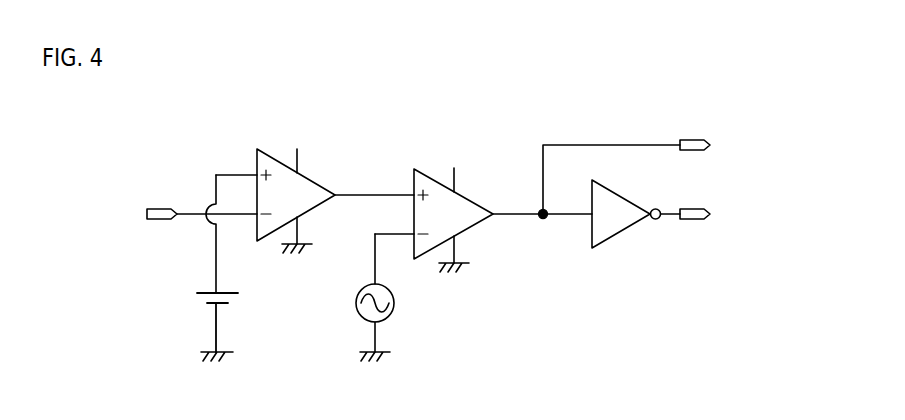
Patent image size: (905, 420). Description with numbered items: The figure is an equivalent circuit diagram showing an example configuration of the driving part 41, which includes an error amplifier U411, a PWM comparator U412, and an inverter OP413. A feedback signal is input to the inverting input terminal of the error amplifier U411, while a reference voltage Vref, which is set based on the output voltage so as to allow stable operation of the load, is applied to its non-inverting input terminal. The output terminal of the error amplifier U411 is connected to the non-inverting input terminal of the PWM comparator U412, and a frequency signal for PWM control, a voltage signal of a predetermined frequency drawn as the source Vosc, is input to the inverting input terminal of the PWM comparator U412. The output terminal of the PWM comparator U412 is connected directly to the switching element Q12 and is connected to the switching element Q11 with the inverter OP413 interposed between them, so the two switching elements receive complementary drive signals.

The driving part 41 is at (563, 93).
The error amplifier U411 is at (302, 191).
The PWM comparator U412 is at (466, 211).
The inverter OP413 is at (627, 210).
The switching element Q11 is at (716, 215).
The switching element Q12 is at (716, 147).
The reference voltage Vref is at (237, 327).
The oscillation voltage source Vosc is at (400, 322).